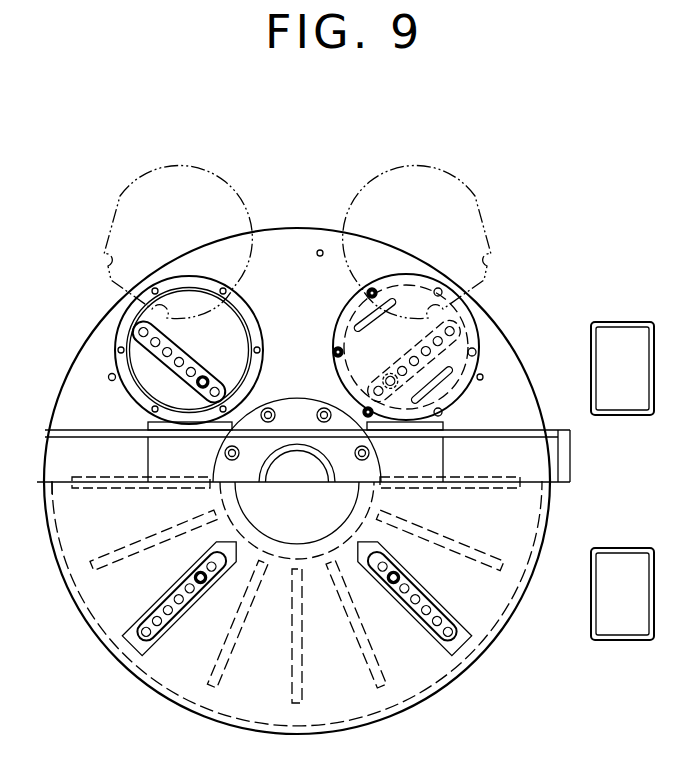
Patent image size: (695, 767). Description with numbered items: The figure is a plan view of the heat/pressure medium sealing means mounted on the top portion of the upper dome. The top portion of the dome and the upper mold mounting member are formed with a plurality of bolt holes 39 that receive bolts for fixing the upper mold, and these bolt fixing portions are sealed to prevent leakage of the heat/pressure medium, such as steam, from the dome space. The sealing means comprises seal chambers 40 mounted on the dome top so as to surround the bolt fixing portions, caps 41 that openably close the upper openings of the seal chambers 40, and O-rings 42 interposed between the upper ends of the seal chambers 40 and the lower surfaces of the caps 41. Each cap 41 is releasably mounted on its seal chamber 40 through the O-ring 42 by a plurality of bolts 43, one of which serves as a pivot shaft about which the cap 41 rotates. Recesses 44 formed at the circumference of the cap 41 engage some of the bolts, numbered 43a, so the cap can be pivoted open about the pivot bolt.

The bolt holes 39 is at (200, 384).
The seal chambers 40 is at (109, 380).
The caps 41 is at (221, 189).
The O-rings 42 is at (150, 326).
The bolts 43 is at (440, 289).
The bolts engaged by recesses 43a is at (374, 288).
The recesses 44 is at (335, 347).